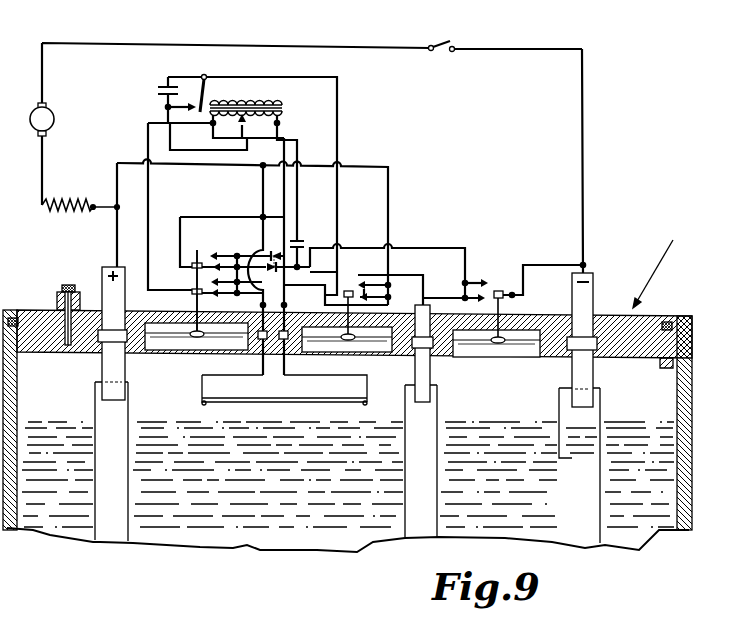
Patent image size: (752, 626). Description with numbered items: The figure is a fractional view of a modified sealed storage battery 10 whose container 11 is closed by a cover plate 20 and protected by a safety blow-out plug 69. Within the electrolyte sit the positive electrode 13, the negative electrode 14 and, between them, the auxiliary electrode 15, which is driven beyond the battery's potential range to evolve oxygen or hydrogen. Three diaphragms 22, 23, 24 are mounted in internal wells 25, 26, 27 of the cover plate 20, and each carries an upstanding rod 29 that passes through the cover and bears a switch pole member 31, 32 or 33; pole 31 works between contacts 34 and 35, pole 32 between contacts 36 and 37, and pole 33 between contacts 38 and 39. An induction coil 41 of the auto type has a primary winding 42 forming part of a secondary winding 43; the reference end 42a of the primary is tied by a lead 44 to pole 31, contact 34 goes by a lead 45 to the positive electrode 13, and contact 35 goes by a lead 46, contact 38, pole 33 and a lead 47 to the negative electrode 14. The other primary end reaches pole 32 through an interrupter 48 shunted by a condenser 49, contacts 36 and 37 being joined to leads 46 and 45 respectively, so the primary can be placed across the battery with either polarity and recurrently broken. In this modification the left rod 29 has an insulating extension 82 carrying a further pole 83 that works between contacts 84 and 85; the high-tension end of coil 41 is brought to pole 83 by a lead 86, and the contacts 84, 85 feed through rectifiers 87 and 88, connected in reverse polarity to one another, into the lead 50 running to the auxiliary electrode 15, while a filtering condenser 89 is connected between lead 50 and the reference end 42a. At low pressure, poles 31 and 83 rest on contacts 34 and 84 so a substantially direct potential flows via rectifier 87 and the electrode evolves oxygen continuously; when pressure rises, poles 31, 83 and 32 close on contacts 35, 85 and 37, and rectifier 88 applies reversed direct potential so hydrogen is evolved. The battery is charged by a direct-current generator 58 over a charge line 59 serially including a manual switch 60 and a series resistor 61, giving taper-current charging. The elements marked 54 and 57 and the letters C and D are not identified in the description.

The storage battery 10 is at (662, 267).
The container 11 is at (690, 412).
The positive electrode 13 is at (105, 410).
The negative electrode 14 is at (600, 412).
The auxiliary electrode 15 is at (440, 408).
The cover plate 20 is at (620, 360).
The diaphragm 22 is at (175, 350).
The diaphragm 23 is at (380, 346).
The diaphragm 24 is at (474, 348).
The internal well 25 is at (205, 345).
The internal well 26 is at (325, 345).
The internal well 27 is at (530, 345).
The rod 29 is at (500, 291).
The switch pole member 31 is at (212, 296).
The switch pole member 32 is at (352, 291).
The switch pole member 33 is at (497, 291).
The contact 34 is at (236, 296).
The contact 35 is at (218, 283).
The contact 36 is at (383, 294).
The contact 37 is at (372, 290).
The contact 38 is at (476, 303).
The contact 39 is at (486, 282).
The induction coil 41 is at (292, 106).
The primary winding 42 is at (240, 99).
The reference end of primary winding 42a is at (210, 126).
The secondary winding 43 is at (270, 99).
The lead 44 is at (150, 193).
The lead 45 is at (228, 170).
The lead 46 is at (387, 271).
The lead 47 is at (545, 265).
The interrupter 48 is at (200, 100).
The condenser 49 is at (158, 88).
The lead 50 is at (412, 275).
The heating element 54 is at (270, 398).
The conductor 57 is at (418, 248).
The direct-current generator 58 is at (54, 121).
The charge line 59 is at (88, 42).
The manual switch 60 is at (437, 44).
The series resistor 61 is at (70, 198).
The safety blow-out plug 69 is at (63, 285).
The insulating extension 82 is at (192, 279).
The switch pole member 83 is at (210, 257).
The contact 84 is at (243, 252).
The contact 85 is at (214, 266).
The lead 86 is at (283, 126).
The rectifier 87 is at (284, 256).
The rectifier 88 is at (276, 252).
The filtering condenser 89 is at (304, 242).
The positive electrode C is at (106, 318).
The negative electrode D is at (590, 329).